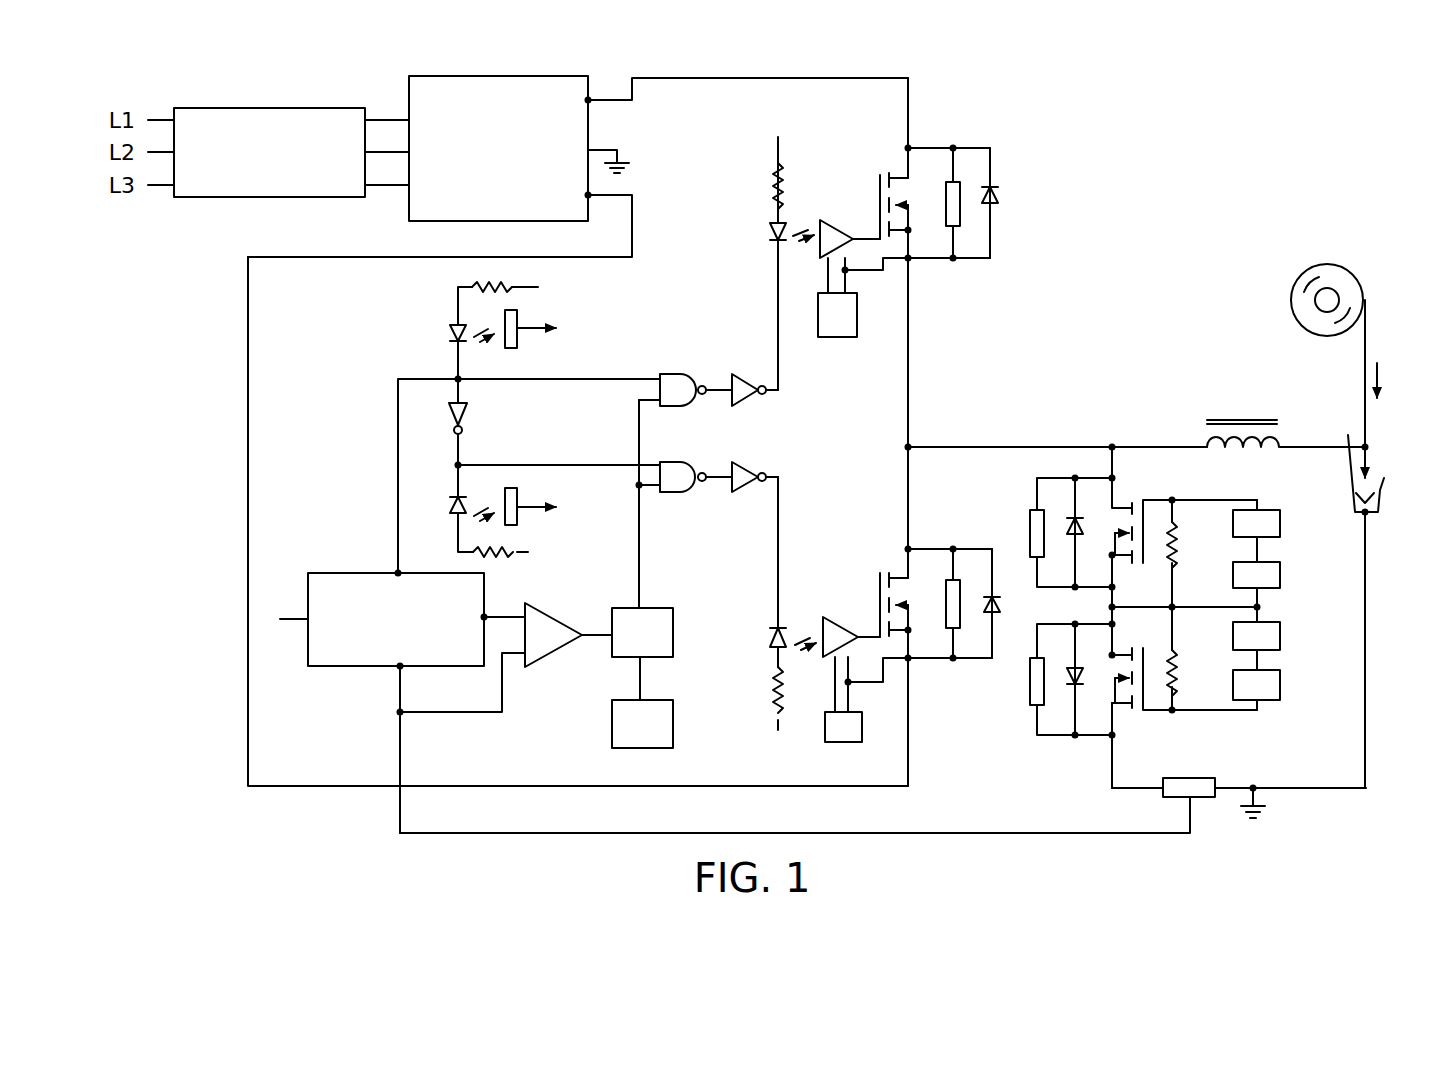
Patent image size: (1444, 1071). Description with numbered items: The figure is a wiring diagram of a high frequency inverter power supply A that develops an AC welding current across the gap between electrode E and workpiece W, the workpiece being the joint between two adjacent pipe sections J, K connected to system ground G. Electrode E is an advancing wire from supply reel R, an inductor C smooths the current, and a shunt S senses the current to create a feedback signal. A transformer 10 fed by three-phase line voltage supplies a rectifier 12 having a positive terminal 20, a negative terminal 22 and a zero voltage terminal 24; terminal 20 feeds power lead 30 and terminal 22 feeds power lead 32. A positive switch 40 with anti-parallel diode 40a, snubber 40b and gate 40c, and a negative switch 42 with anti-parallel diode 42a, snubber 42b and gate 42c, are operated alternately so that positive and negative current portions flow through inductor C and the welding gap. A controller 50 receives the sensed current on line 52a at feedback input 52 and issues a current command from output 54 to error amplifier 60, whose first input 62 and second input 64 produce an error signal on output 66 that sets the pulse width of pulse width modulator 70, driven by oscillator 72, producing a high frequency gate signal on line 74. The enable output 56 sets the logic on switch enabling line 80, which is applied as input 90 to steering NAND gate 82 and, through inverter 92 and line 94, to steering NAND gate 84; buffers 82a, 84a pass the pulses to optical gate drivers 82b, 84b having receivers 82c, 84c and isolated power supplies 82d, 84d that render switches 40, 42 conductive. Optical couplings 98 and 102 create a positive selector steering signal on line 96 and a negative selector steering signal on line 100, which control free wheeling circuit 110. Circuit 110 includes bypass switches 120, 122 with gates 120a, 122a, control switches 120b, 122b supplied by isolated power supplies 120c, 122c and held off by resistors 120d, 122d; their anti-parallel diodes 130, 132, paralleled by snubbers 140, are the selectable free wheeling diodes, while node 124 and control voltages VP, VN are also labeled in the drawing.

The transformer 10 is at (245, 198).
The rectifier 12 is at (408, 208).
The positive terminal 20 is at (592, 102).
The negative terminal 22 is at (593, 200).
The zero voltage terminal 24 is at (596, 150).
The power lead 30 is at (908, 97).
The power lead 32 is at (246, 549).
The positive switch 40 is at (890, 158).
The anti-parallel diode 40a is at (1000, 197).
The snubber 40b is at (960, 188).
The gate 40c is at (868, 232).
The negative switch 42 is at (887, 558).
The anti-parallel diode 42a is at (991, 595).
The snubber 42b is at (952, 630).
The gate 42c is at (872, 633).
The controller 50 is at (327, 667).
The arc current feedback input 52 is at (395, 669).
The line 52a is at (400, 813).
The current control output 54 is at (487, 620).
The enable output 56 is at (396, 571).
The error amplifier 60 is at (555, 653).
The first input 62 is at (508, 617).
The second input 64 is at (480, 713).
The output 66 is at (593, 632).
The pulse width modulator 70 is at (673, 612).
The oscillator 72 is at (673, 730).
The output line 74 is at (642, 567).
The switch enabling signal line 80 is at (408, 378).
The steering NAND gate 82 is at (677, 370).
The buffer 82a is at (743, 372).
The gate driver 82b is at (767, 233).
The receiver 82c is at (833, 220).
The isolated power supply 82d is at (840, 337).
The steering NAND gate 84 is at (683, 460).
The buffer 84a is at (747, 463).
The gate driver 84b is at (770, 640).
The receiver 84c is at (835, 617).
The isolated power supply 84d is at (843, 742).
The input 90 is at (593, 377).
The inverter 92 is at (447, 417).
The line 94 is at (565, 462).
The positive selector steering line 96 is at (539, 335).
The optical coupling 98 is at (450, 330).
The negative selector steering line 100 is at (540, 500).
The optical coupling 102 is at (450, 507).
The bidirectional free wheeling circuit 110 is at (1148, 478).
The bypass switch 120 is at (1130, 482).
The gate 120a is at (1158, 498).
The control switch 120b is at (1267, 510).
The isolated power supply 120c is at (1281, 572).
The resistor 120d is at (1180, 534).
The bypass switch 122 is at (1125, 713).
The gate 122a is at (1157, 711).
The switch 122b is at (1290, 623).
The isolated power supply 122c is at (1283, 688).
The resistor 122d is at (1177, 662).
The junction line 124 is at (1153, 605).
The anti-parallel diode 130 is at (1070, 520).
The anti-parallel diode 132 is at (1072, 687).
The snubber 140 is at (1029, 523).
The high frequency inverter power supply A is at (917, 118).
The inductor C is at (1255, 417).
The electrode E is at (1372, 477).
The system ground G is at (632, 167).
The pipe section J is at (1354, 454).
The pipe section K is at (1384, 492).
The supply reel R is at (1333, 262).
The shunt S is at (1197, 780).
The workpiece W is at (1387, 505).
The negative control voltage VN is at (1283, 525).
The positive control voltage VP is at (1283, 635).